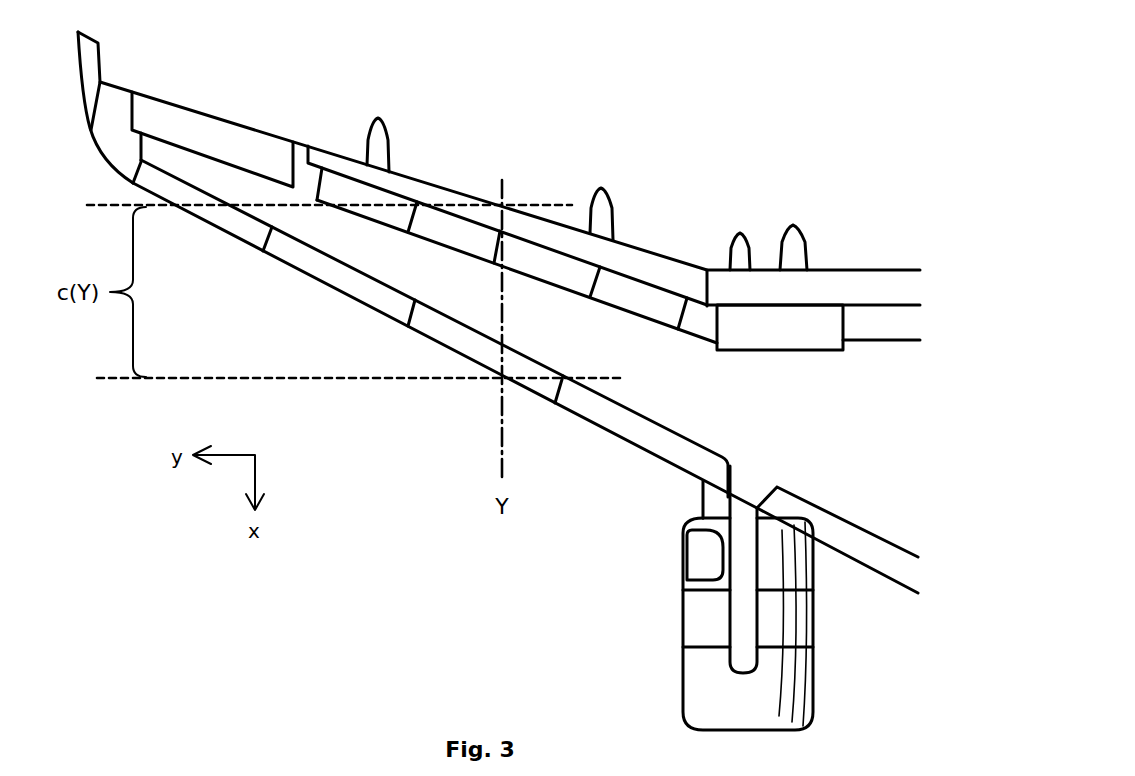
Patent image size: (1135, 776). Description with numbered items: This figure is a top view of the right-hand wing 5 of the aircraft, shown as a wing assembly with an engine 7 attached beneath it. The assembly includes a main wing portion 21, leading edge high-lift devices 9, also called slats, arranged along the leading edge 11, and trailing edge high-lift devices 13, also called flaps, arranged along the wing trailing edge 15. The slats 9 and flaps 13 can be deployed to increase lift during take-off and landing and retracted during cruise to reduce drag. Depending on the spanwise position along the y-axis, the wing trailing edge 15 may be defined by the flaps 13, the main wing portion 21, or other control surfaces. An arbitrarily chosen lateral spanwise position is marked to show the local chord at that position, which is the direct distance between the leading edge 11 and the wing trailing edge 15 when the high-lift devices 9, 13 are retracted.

The wing 5 is at (675, 122).
The engine 7 is at (710, 682).
The leading edge high-lift device 9 is at (430, 330).
The leading edge 11 is at (500, 378).
The trailing edge high-lift device 13 is at (417, 190).
The wing trailing edge 15 is at (502, 206).
The main wing portion 21 is at (657, 353).